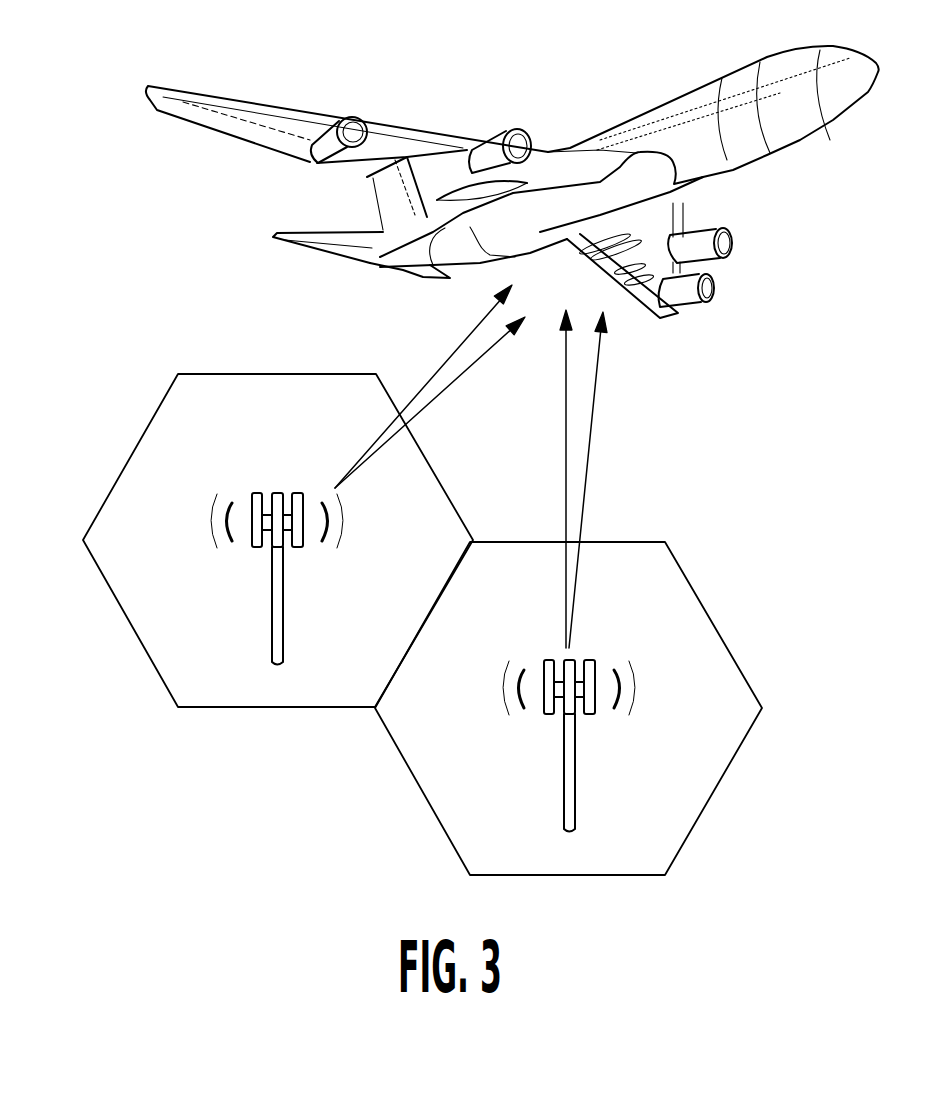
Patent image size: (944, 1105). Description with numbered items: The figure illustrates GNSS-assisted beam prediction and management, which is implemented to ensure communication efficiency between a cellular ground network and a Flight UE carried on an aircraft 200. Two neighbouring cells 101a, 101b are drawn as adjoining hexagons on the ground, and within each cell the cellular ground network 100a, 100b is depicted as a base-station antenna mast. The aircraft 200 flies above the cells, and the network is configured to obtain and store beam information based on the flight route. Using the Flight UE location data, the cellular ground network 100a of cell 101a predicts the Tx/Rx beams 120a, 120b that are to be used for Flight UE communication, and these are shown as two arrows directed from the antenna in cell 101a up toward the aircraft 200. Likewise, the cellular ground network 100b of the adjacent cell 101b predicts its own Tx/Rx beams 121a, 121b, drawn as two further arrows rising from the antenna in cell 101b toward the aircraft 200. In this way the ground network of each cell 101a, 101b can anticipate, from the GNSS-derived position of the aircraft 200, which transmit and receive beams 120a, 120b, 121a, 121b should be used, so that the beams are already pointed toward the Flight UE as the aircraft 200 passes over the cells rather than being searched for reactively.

The aircraft 200 is at (423, 130).
The cell 101a is at (137, 453).
The cell 101b is at (712, 623).
The cellular ground network 100a is at (277, 493).
The cellular ground network 100b is at (587, 713).
The Tx/Rx beam 120a is at (445, 362).
The Tx/Rx beam 120b is at (475, 368).
The Tx/Rx beam 121a is at (563, 443).
The Tx/Rx beam 121b is at (594, 405).